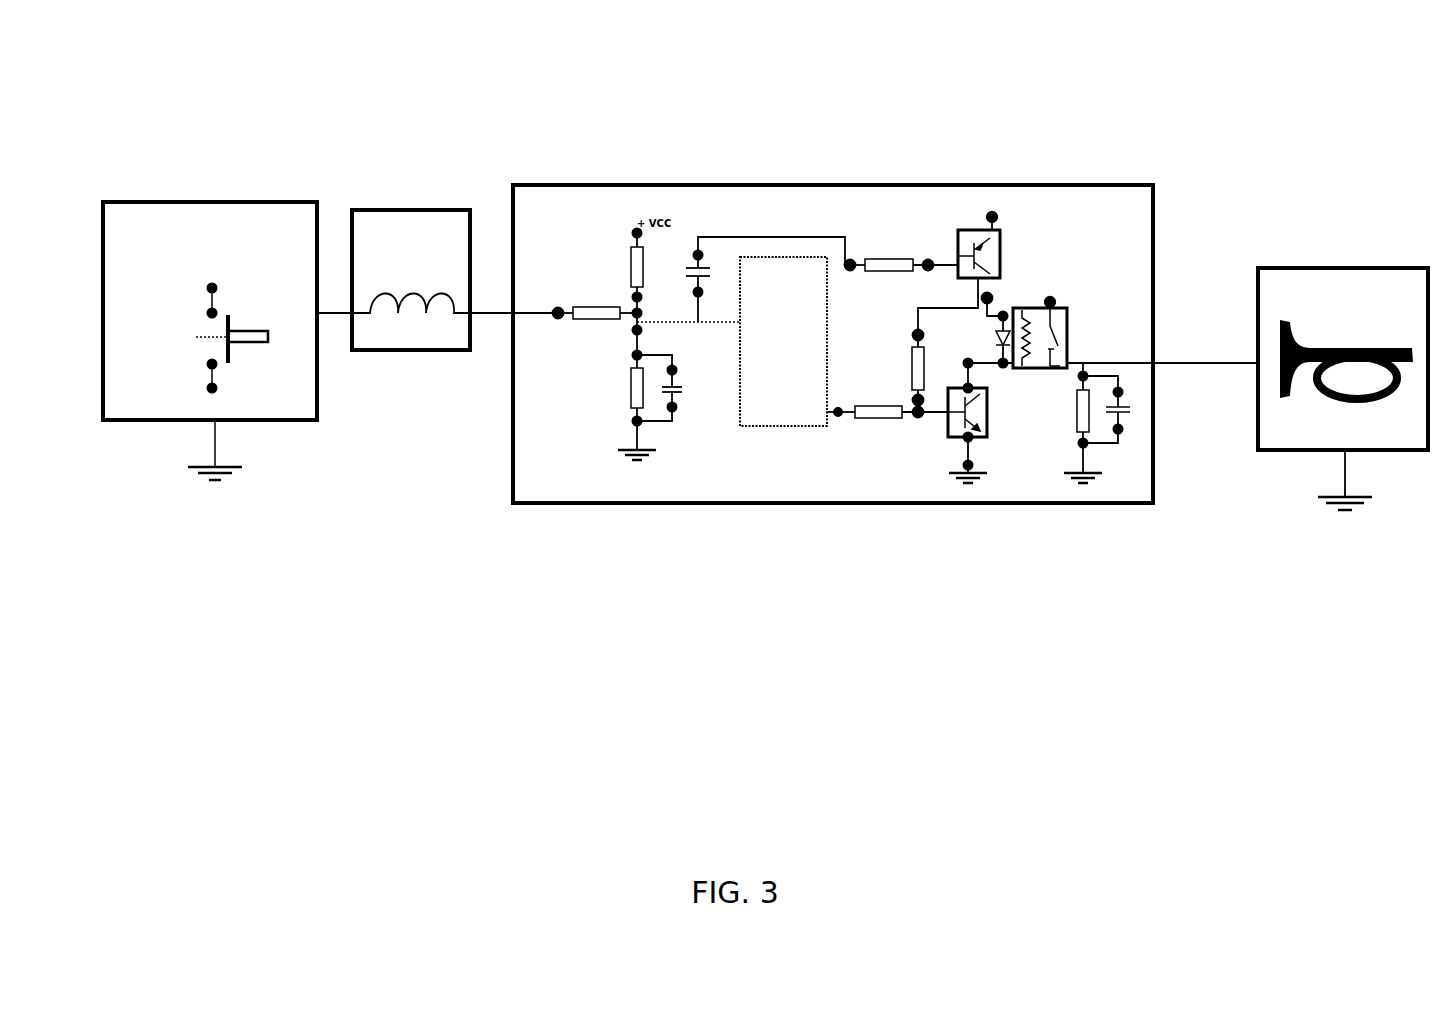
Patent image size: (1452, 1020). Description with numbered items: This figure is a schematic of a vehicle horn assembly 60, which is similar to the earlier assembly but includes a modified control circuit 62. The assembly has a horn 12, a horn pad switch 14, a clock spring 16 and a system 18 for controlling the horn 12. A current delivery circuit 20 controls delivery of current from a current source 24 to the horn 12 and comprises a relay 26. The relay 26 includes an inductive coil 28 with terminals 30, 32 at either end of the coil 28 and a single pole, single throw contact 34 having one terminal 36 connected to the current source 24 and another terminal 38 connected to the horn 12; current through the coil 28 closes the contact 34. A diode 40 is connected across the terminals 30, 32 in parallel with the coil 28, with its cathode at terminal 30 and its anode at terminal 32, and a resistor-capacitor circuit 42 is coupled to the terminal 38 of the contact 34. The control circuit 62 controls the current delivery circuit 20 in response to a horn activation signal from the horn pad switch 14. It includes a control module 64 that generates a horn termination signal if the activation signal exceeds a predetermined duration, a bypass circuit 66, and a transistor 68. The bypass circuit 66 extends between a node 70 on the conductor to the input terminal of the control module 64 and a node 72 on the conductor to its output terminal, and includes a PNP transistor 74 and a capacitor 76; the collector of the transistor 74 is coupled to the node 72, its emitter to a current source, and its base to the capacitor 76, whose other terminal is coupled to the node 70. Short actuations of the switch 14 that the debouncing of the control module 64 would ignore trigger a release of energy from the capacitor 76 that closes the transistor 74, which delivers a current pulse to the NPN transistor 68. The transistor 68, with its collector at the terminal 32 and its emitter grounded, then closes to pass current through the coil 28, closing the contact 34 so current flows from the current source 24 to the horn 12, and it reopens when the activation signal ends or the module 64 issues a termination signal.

The horn 12 is at (1400, 287).
The horn pad switch 14 is at (175, 210).
The clock spring 16 is at (363, 223).
The system for controlling horn 18 is at (603, 202).
The current delivery circuit 20 is at (1113, 450).
The current source 24 is at (1128, 354).
The relay 26 is at (1067, 333).
The inductive coil 28 is at (1030, 352).
The terminal 30 is at (1023, 310).
The terminal 32 is at (1013, 375).
The single pole, single throw contact 34 is at (1067, 347).
The terminal 36 is at (1067, 313).
The terminal 38 is at (1067, 360).
The diode 40 is at (998, 348).
The resistor-capacitor (RC) circuit 42 is at (1125, 435).
The vehicle horn assembly 60 is at (528, 100).
The control circuit 62 is at (688, 486).
The control module 64 is at (750, 410).
The bypass circuit 66 is at (887, 235).
The transistor 68 is at (953, 437).
The node 70 is at (697, 323).
The node 72 is at (917, 413).
The transistor 74 is at (962, 232).
The capacitor 76 is at (690, 262).